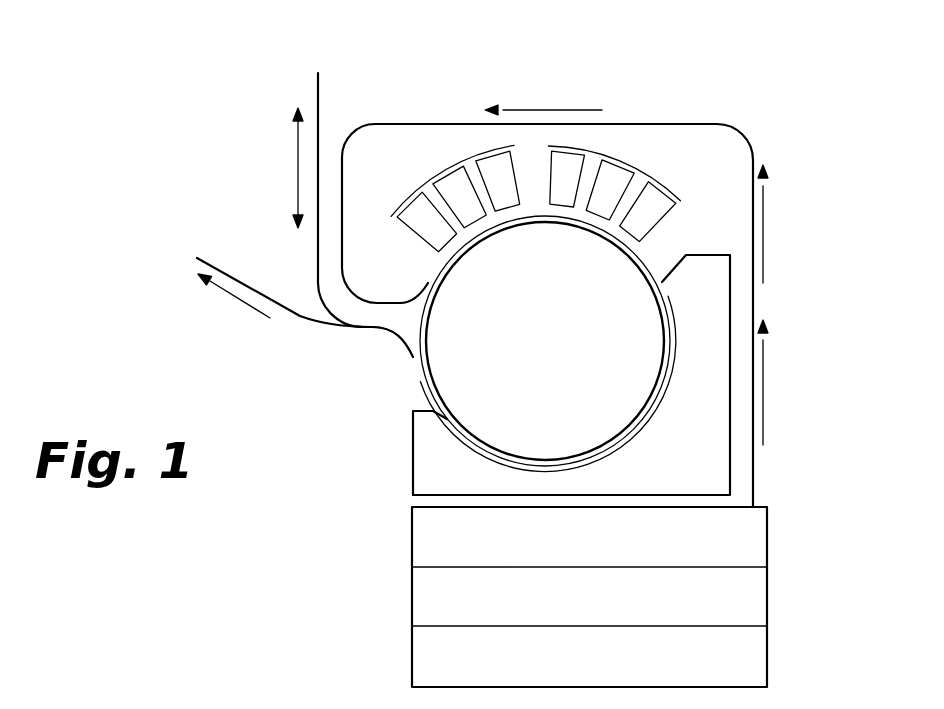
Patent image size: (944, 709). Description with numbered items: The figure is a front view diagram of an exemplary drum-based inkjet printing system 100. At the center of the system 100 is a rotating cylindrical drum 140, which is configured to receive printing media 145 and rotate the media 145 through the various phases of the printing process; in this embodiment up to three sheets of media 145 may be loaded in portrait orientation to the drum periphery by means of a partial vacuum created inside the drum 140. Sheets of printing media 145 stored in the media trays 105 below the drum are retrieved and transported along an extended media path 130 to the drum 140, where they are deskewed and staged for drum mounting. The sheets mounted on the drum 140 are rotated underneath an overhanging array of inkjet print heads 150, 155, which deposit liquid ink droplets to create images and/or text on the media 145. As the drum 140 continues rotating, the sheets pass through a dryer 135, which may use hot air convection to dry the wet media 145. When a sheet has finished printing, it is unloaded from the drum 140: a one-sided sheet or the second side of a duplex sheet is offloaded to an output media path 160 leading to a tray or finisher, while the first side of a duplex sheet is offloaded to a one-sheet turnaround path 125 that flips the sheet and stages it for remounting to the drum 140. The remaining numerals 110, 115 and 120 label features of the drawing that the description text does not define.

The drum-based inkjet printing system 100 is at (226, 60).
The media trays 105 is at (768, 595).
The media transport path 110 is at (730, 123).
The media sheet 115 is at (413, 296).
The nip / transfer point 120 is at (390, 338).
The one-sheet turnaround path 125 is at (320, 118).
The extended media path 130 is at (763, 390).
The dryer 135 is at (426, 469).
The drum 140 is at (617, 298).
The printing media 145 is at (427, 378).
The inkjet print heads 150 is at (635, 187).
The inkjet print heads 155 is at (433, 183).
The output media path 160 is at (228, 272).